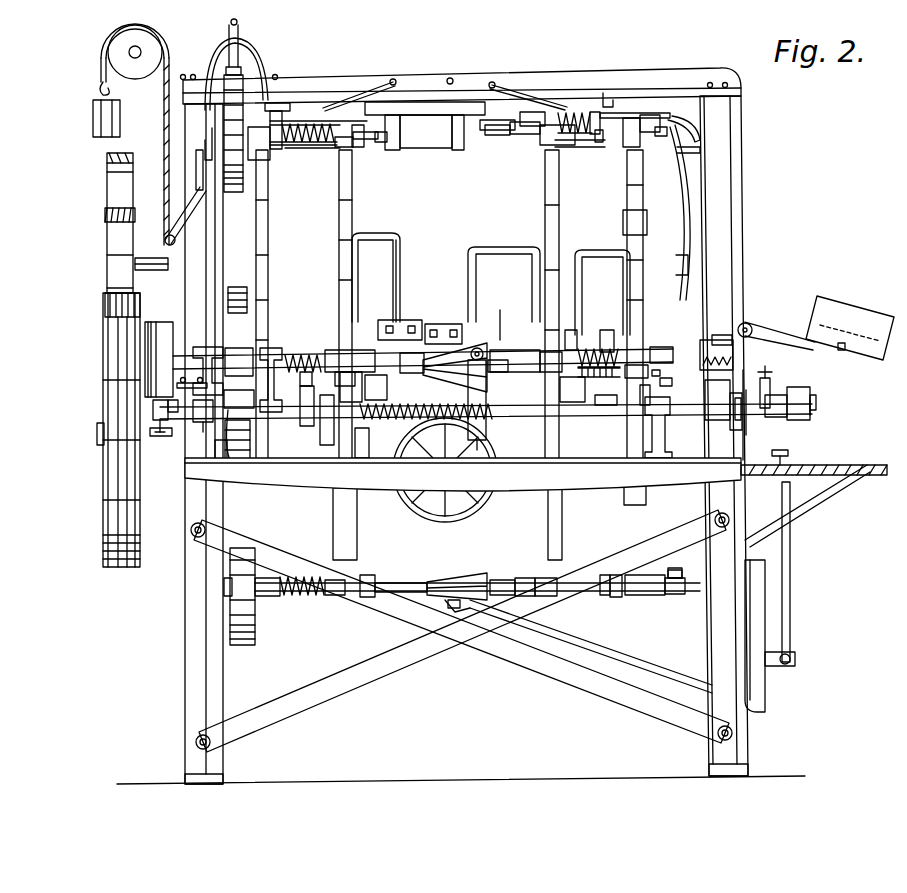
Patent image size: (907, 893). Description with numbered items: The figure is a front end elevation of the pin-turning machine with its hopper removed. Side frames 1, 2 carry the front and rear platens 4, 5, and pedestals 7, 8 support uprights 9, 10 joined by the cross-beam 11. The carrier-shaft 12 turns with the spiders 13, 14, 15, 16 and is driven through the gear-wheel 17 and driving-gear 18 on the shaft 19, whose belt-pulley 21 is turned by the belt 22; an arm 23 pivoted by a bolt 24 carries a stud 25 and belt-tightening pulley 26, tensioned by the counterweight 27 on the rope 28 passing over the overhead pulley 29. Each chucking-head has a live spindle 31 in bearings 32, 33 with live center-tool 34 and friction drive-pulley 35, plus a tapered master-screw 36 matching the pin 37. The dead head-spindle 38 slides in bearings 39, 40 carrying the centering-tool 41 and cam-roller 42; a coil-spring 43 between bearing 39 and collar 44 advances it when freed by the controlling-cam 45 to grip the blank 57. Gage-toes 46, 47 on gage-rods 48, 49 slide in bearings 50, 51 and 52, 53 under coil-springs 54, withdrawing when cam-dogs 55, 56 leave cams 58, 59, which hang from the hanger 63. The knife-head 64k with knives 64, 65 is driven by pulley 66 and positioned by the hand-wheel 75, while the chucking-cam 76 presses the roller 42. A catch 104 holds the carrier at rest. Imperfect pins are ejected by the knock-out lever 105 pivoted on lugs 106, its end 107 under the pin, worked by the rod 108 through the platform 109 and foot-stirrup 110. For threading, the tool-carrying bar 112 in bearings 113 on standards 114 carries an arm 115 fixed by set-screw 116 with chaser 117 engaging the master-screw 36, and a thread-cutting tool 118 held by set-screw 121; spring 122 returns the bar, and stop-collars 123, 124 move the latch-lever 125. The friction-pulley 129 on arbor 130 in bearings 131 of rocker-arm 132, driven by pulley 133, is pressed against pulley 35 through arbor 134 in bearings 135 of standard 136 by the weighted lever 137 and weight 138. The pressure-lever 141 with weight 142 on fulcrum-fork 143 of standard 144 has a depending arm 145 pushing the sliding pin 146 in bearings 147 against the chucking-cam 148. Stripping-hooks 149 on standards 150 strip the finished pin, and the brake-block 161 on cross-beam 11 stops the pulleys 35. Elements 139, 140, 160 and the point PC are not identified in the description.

The side frame 1 is at (746, 737).
The side frame 2 is at (185, 658).
The front platen 4 is at (463, 474).
The rear platen 5 is at (460, 650).
The pedestal or base 7 is at (743, 428).
The pedestal or base 8 is at (182, 450).
The upright 9 is at (740, 262).
The upright 10 is at (180, 294).
The cross-beam 11 is at (485, 75).
The carrier-shaft 12 is at (500, 356).
The spider 13 is at (643, 190).
The spider 14 is at (559, 205).
The spider 15 is at (352, 210).
The spider 16 is at (268, 218).
The gear-wheel 17 is at (239, 290).
The driving-gear 18 is at (238, 455).
The shaft 19 is at (98, 436).
The belt-pulley 21 is at (106, 498).
The driving-belt 22 is at (107, 176).
The arm 23 is at (182, 232).
The bolt 24 is at (196, 158).
The stud 25 is at (148, 258).
The belt-tightening pulley 26 is at (107, 256).
The counterweight 27 is at (92, 128).
The rope 28 is at (167, 90).
The fixed overhead pulley 29 is at (135, 52).
The live spindle 31 is at (210, 596).
The fixed bearing 32 is at (330, 125).
The fixed bearing 33 is at (266, 598).
The live center-tool 34 is at (366, 140).
The friction drive-pulley 35 is at (236, 195).
The master-screw 36 is at (305, 120).
The pin 37 is at (440, 352).
The dead head-spindle 38 is at (675, 592).
The fixed bearing 39 is at (636, 598).
The fixed bearing 40 is at (538, 118).
The centering-tool 41 is at (493, 135).
The cam-roller 42 is at (660, 136).
The coil-spring 43 is at (598, 110).
The collar 44 is at (578, 110).
The controlling-cam 45 is at (686, 182).
The gage-toe 46 is at (378, 140).
The gage-toe 47 is at (472, 135).
The gage-rod 48 is at (355, 150).
The gage-rod 49 is at (522, 135).
The bearing 50 is at (344, 261).
The bearing 51 is at (259, 143).
The bearing 52 is at (557, 252).
The bearing 53 is at (636, 372).
The coil-spring 54 is at (445, 258).
The cam-dog 55 is at (272, 126).
The cam-dog 56 is at (600, 142).
The blank or block 57 is at (426, 131).
The cam 58 is at (310, 150).
The cam 59 is at (652, 115).
The supporting-hanger 63 is at (612, 108).
The knife 64 is at (480, 295).
The knife-head 64k is at (512, 314).
The knife 65 is at (395, 300).
The drive pulley 66 is at (600, 320).
The hand-wheel 75 is at (478, 505).
The chucking-cam 76 is at (676, 266).
The catch 104 is at (626, 220).
The knock-out lever 105 is at (598, 655).
The lug 106 is at (755, 592).
The knock-out end 107 is at (455, 600).
The rod 108 is at (790, 550).
The operator's platform 109 is at (835, 465).
The foot-stirrup 110 is at (782, 450).
The tool-carrying bar 112 is at (565, 420).
The bearing 113 is at (360, 420).
The standard 114 is at (645, 442).
The arm 115 is at (315, 400).
The set-screw 116 is at (345, 422).
The chasing tool 117 is at (280, 345).
The thread-cutting tool 118 is at (470, 350).
The set-screw 121 is at (478, 430).
The coil-spring 122 is at (426, 422).
The stop-collar 123 is at (741, 418).
The stop-collar 124 is at (798, 395).
The latch-lever 125 is at (768, 380).
The friction-pulley 129 is at (239, 362).
The arbor 130 is at (167, 330).
The bearing 131 is at (283, 345).
The rocker-arm 132 is at (210, 398).
The pulley 133 is at (152, 352).
The arbor 134 is at (160, 440).
The bearing 135 is at (200, 425).
The standard 136 is at (218, 445).
The weighted lever 137 is at (152, 410).
The weight 138 is at (145, 438).
The shaft end 139 is at (812, 410).
The block 140 is at (665, 387).
The weighted pressure-lever 141 is at (762, 332).
The weight 142 is at (850, 328).
The fulcrum-fork 143 is at (755, 330).
The standard 144 is at (724, 425).
The depending arm 145 is at (722, 318).
The sliding pin 146 is at (840, 310).
The bearing 147 is at (722, 335).
The chucking-cam 148 is at (660, 425).
The stripping-hook 149 is at (468, 283).
The standard 150 is at (350, 450).
The plate 160 is at (455, 148).
The brake-block 161 is at (240, 95).
The pivot center PC is at (463, 621).